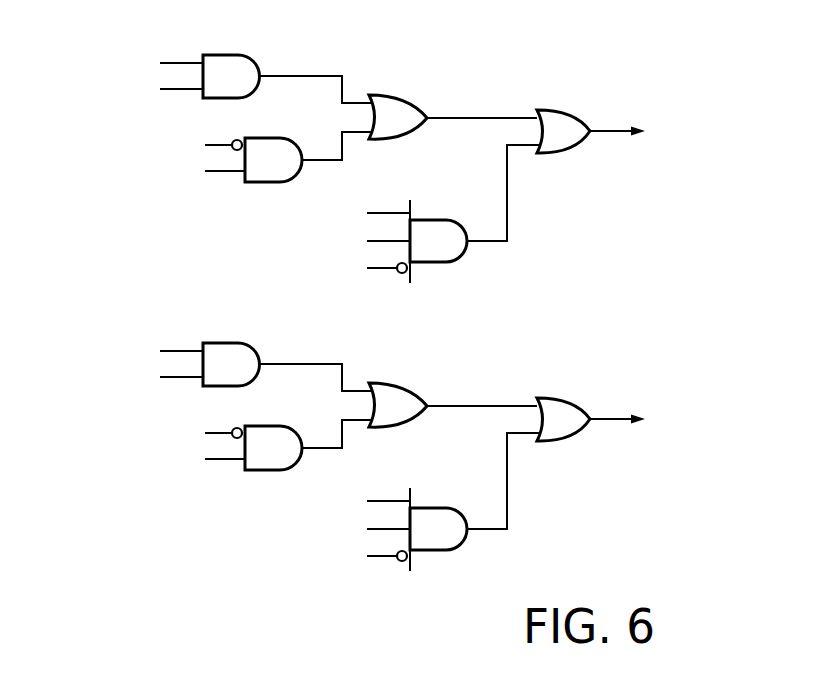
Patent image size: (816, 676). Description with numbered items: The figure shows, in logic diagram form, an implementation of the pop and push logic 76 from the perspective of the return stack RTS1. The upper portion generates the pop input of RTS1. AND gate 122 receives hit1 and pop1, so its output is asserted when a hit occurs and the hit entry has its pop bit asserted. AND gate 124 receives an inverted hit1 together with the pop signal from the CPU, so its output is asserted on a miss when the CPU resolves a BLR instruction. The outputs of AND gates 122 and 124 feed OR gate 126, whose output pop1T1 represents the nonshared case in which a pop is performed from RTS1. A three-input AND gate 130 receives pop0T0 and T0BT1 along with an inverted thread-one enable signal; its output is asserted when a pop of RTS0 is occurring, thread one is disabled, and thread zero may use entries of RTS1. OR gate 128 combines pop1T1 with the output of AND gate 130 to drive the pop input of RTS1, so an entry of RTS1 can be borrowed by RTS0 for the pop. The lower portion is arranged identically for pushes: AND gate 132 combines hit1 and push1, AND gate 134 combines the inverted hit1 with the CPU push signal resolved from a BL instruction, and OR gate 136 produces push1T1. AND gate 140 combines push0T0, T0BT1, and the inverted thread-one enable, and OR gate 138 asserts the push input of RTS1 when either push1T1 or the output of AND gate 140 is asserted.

The AND gate 122 is at (225, 55).
The AND gate 124 is at (271, 138).
The OR gate 126 is at (389, 95).
The OR gate 128 is at (553, 110).
The AND gate 130 is at (433, 220).
The AND gate 132 is at (225, 343).
The AND gate 134 is at (271, 426).
The OR gate 136 is at (389, 383).
The OR gate 138 is at (553, 398).
The AND gate 140 is at (433, 508).
The pop and push logic 76 is at (603, 571).